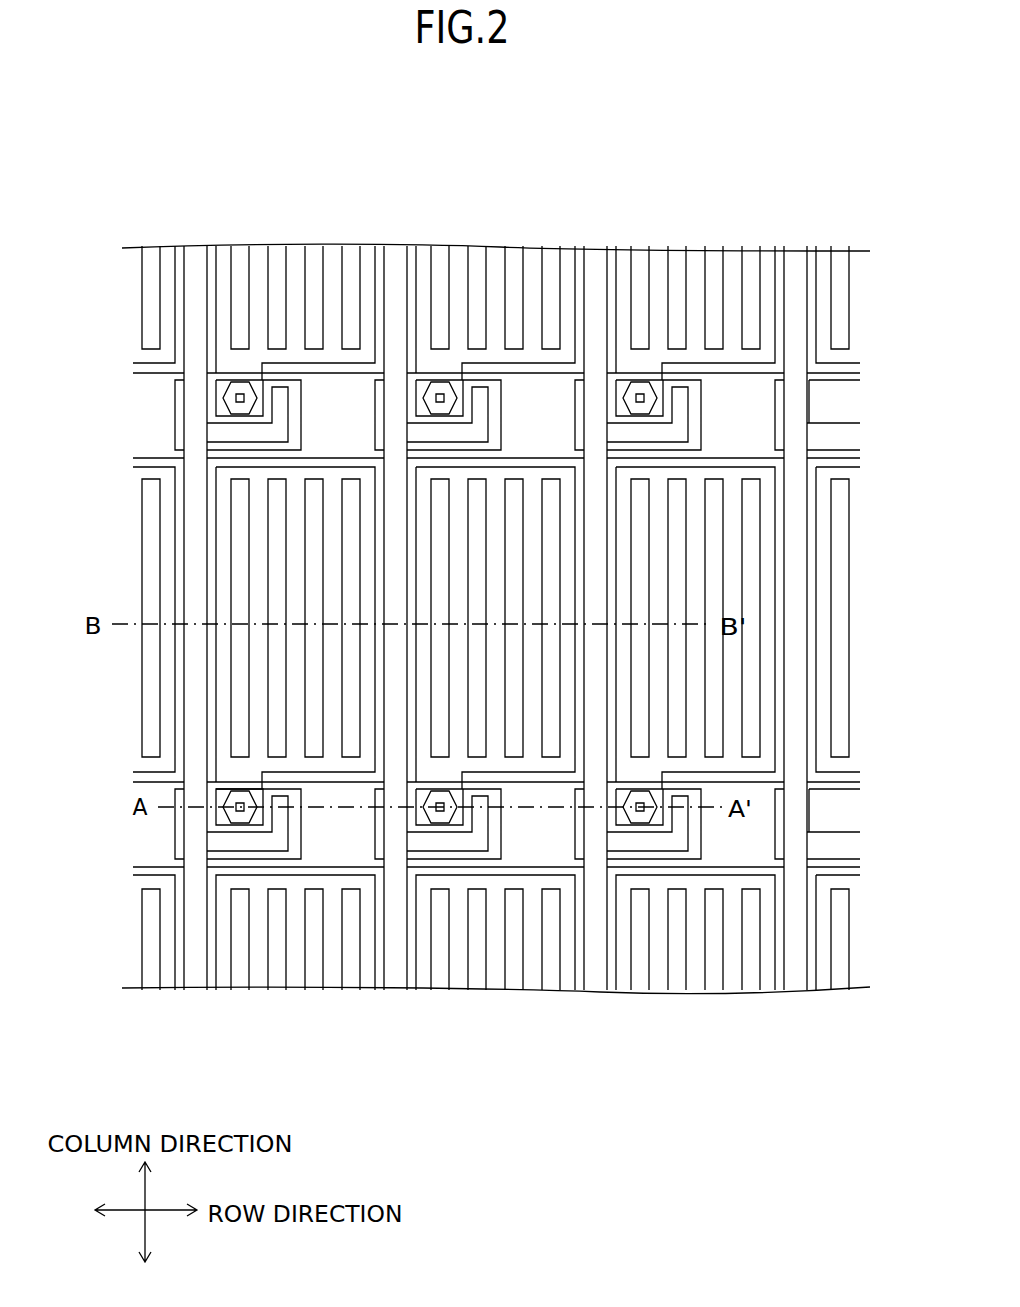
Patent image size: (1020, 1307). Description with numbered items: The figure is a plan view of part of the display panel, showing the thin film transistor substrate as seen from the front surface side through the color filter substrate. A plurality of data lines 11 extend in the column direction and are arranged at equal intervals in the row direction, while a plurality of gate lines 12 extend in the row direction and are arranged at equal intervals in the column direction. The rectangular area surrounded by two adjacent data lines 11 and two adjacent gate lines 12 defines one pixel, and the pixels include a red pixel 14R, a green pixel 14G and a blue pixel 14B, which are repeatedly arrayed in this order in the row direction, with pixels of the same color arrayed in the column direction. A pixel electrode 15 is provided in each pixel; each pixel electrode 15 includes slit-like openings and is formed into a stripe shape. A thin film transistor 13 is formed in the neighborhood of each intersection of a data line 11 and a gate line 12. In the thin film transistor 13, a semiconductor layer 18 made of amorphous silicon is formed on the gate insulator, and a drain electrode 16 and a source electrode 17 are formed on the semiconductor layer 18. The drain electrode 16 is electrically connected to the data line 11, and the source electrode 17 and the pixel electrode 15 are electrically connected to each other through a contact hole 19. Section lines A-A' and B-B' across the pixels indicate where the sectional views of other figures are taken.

The data line 11 is at (800, 1020).
The gate line 12 is at (143, 423).
The thin film transistor 13 is at (516, 834).
The red pixel 14R is at (375, 220).
The green pixel 14G is at (575, 220).
The blue pixel 14B is at (775, 220).
The pixel electrode 15 is at (223, 580).
The drain electrode 16 is at (283, 827).
The source electrode 17 is at (233, 797).
The semiconductor layer 18 is at (295, 816).
The contact hole 19 is at (240, 805).